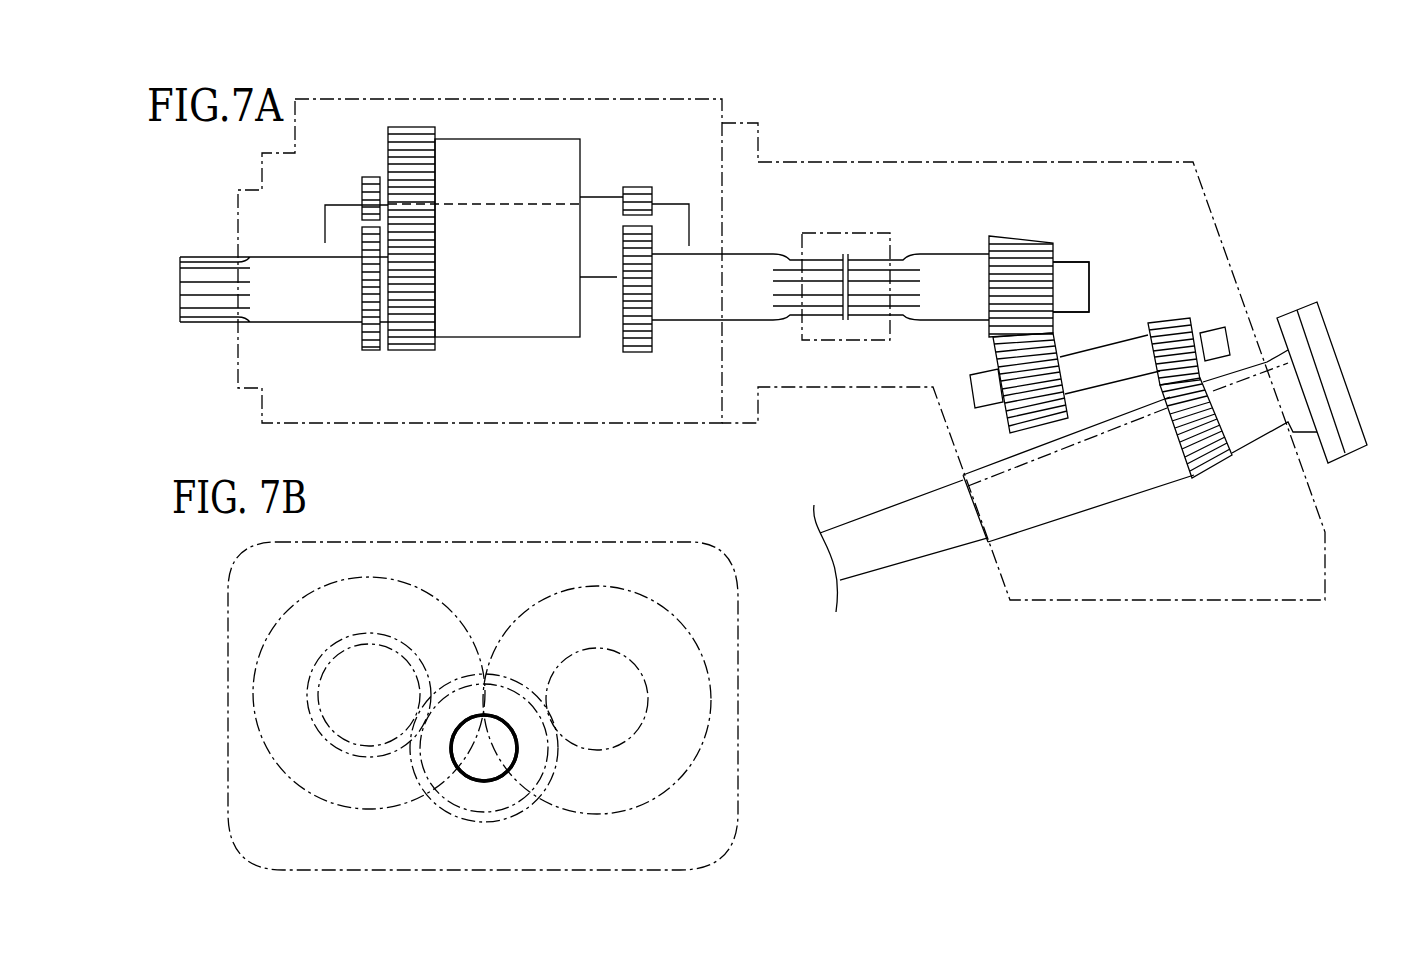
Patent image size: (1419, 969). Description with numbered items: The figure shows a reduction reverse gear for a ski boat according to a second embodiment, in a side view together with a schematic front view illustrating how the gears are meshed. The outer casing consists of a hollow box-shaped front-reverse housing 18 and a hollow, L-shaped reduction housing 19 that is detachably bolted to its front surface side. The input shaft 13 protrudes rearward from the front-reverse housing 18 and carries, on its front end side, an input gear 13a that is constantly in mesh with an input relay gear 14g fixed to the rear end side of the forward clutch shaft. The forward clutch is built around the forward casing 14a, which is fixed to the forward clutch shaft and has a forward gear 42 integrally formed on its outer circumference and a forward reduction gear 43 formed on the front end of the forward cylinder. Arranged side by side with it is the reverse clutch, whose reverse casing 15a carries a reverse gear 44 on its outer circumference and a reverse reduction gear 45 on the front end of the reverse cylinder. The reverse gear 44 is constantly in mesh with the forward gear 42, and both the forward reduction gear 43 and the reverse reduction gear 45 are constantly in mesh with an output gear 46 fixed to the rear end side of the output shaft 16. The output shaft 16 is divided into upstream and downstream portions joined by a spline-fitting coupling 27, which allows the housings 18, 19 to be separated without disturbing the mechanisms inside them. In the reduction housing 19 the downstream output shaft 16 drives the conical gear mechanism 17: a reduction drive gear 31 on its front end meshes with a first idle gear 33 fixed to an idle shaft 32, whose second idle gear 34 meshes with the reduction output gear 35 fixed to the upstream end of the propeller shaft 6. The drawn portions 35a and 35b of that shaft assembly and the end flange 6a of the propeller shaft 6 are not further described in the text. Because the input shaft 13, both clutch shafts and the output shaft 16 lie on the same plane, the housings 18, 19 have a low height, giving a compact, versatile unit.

In FIG. 7A, the propeller shaft 6 is at (912, 555).
In FIG. 7A, the flange disk of input shaft 6a is at (1322, 333).
In FIG. 7A, the input shaft 13 is at (225, 318).
In FIG. 7B, the input shaft 13 is at (497, 768).
In FIG. 7A, the input gear 13a is at (372, 340).
In FIG. 7B, the input gear 13a is at (487, 820).
In FIG. 7A, the forward casing 14a is at (520, 325).
In FIG. 7B, the forward casing 14a is at (264, 610).
In FIG. 7A, the input relay gear 14g is at (370, 182).
In FIG. 7B, the input relay gear 14g is at (350, 757).
In FIG. 7B, the reverse casing 15a is at (701, 597).
In FIG. 7A, the output shaft 16 is at (950, 262).
In FIG. 7B, the output shaft 16 is at (484, 748).
In FIG. 7A, the conical gear mechanism 17 is at (1096, 230).
In FIG. 7A, the front-reverse housing 18 is at (497, 99).
In FIG. 7B, the front-reverse housing 18 is at (500, 541).
In FIG. 7A, the reduction housing 19 is at (965, 162).
In FIG. 7A, the coupling 27 is at (862, 340).
In FIG. 7A, the reduction drive gear 31 is at (1022, 240).
In FIG. 7A, the idle shaft 32 is at (1105, 355).
In FIG. 7A, the first idle gear 33 is at (1005, 430).
In FIG. 7A, the second idle gear 34 is at (1190, 330).
In FIG. 7A, the reduction output gear 35 is at (1215, 480).
In FIG. 7A, the hollow shaft 35a is at (1098, 497).
In FIG. 7A, the shaft end portion 35b is at (1330, 455).
In FIG. 7A, the forward gear 42 is at (410, 135).
In FIG. 7B, the forward gear 42 is at (383, 577).
In FIG. 7A, the forward reduction gear 43 is at (637, 193).
In FIG. 7B, the forward reduction gear 43 is at (318, 762).
In FIG. 7B, the reverse gear 44 is at (605, 587).
In FIG. 7B, the reverse reduction gear 45 is at (600, 748).
In FIG. 7A, the output gear 46 is at (637, 325).
In FIG. 7B, the output gear 46 is at (462, 807).